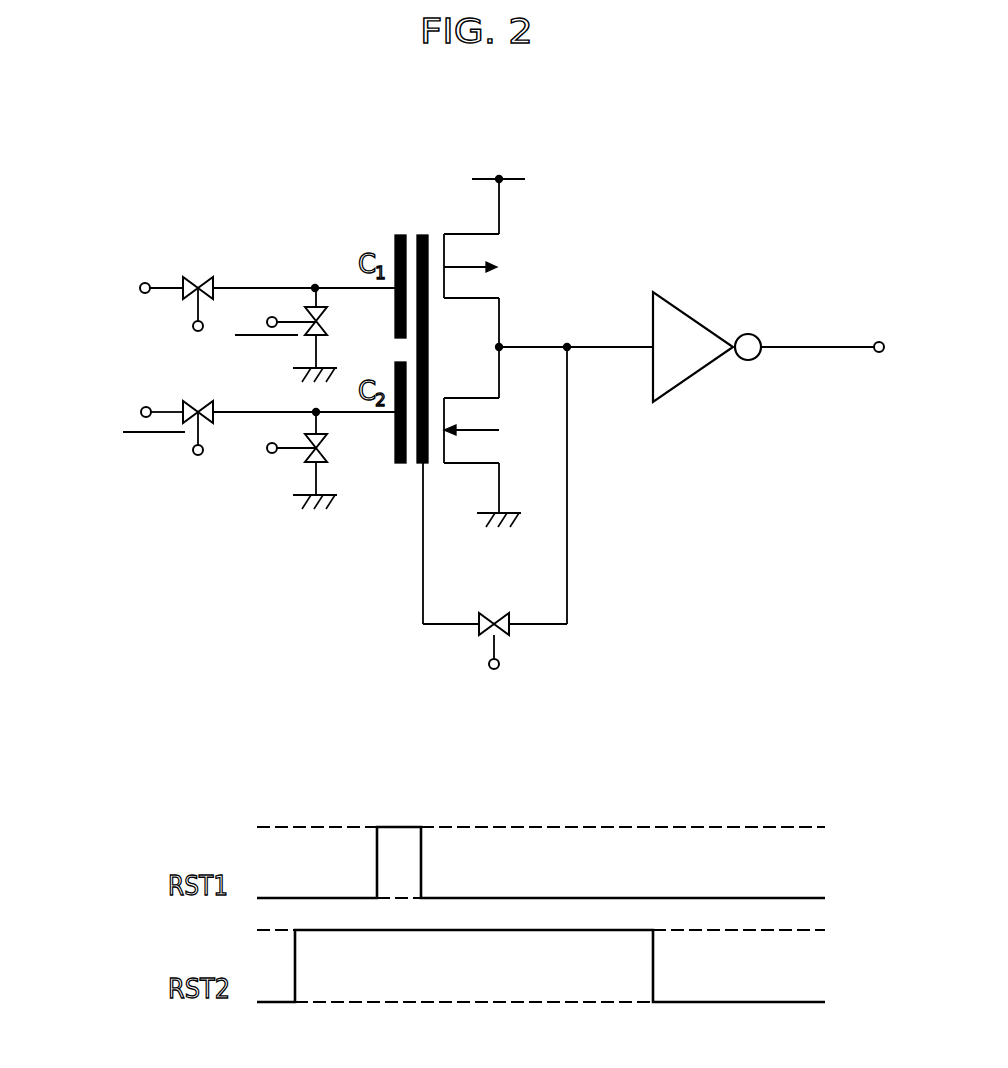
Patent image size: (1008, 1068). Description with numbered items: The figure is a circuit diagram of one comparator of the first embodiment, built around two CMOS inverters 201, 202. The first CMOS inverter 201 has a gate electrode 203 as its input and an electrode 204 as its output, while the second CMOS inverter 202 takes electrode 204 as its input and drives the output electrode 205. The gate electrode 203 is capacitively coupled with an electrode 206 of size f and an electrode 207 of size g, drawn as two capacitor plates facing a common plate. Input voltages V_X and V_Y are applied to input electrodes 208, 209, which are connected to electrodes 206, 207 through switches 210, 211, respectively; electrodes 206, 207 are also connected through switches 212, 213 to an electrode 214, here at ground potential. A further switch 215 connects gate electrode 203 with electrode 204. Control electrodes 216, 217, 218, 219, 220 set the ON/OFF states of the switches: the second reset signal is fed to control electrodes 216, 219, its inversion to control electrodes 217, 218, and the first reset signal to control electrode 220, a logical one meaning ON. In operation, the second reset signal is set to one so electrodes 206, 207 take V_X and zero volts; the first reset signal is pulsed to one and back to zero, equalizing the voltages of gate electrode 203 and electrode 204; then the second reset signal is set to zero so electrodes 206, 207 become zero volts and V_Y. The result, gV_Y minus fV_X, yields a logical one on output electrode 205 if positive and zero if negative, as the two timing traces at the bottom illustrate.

The CMOS inverter 201 is at (497, 266).
The CMOS inverter 202 is at (695, 323).
The gate electrode 203 is at (423, 233).
The electrode 204 is at (570, 345).
The electrode 205 is at (790, 345).
The electrode 206 is at (401, 233).
The electrode 207 is at (395, 466).
The input electrode 208 is at (138, 282).
The input electrode 209 is at (138, 405).
The switch 210 is at (285, 284).
The switch 211 is at (285, 408).
The switch 212 is at (335, 334).
The switch 213 is at (341, 452).
The electrode 214 is at (310, 511).
The switch 215 is at (495, 621).
The control electrode 216 is at (171, 339).
The control electrode 217 is at (171, 462).
The control electrode 218 is at (275, 328).
The control electrode 219 is at (275, 452).
The control electrode 220 is at (494, 709).